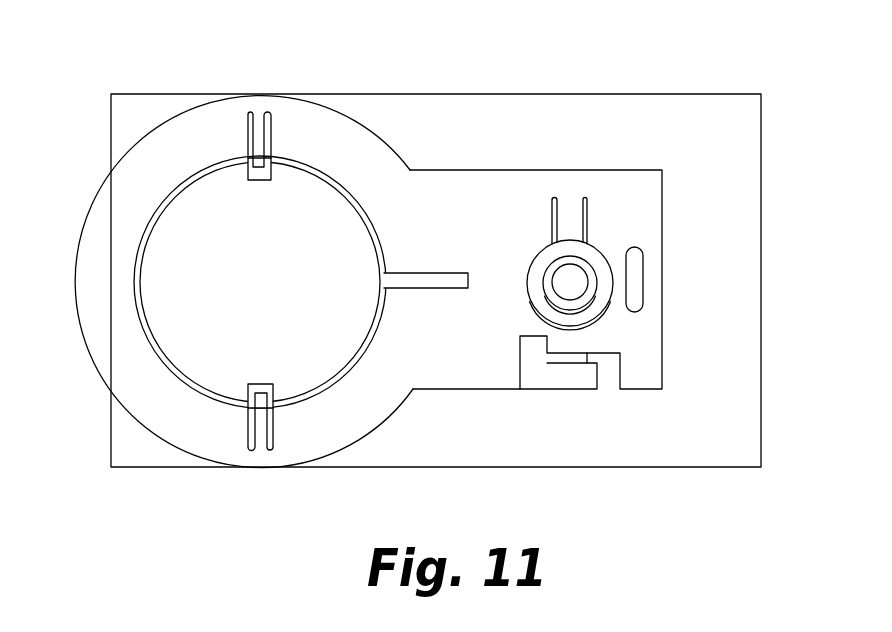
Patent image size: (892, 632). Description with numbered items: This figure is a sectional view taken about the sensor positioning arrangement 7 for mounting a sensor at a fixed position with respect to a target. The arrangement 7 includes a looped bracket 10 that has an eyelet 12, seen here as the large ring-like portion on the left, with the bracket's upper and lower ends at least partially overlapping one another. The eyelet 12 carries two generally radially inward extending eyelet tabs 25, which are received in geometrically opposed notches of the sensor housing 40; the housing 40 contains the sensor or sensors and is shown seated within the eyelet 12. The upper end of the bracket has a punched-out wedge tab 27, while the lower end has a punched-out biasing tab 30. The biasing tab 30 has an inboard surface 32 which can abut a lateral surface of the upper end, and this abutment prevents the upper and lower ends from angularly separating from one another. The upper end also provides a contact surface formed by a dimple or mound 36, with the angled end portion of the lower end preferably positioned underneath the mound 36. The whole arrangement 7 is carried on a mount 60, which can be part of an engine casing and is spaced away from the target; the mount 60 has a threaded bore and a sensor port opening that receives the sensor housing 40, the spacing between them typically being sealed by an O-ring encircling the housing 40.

The arrangement for mounting a sensor 7 is at (432, 259).
The bracket 10 is at (122, 196).
The eyelet 12 is at (337, 138).
The eyelet tabs 25 is at (258, 153).
The wedge tab 27 is at (571, 220).
The biasing tab 30 is at (565, 377).
The inboard surface 32 is at (587, 353).
The mound 36 is at (637, 268).
The housing 40 is at (331, 384).
The mount 60 is at (453, 94).